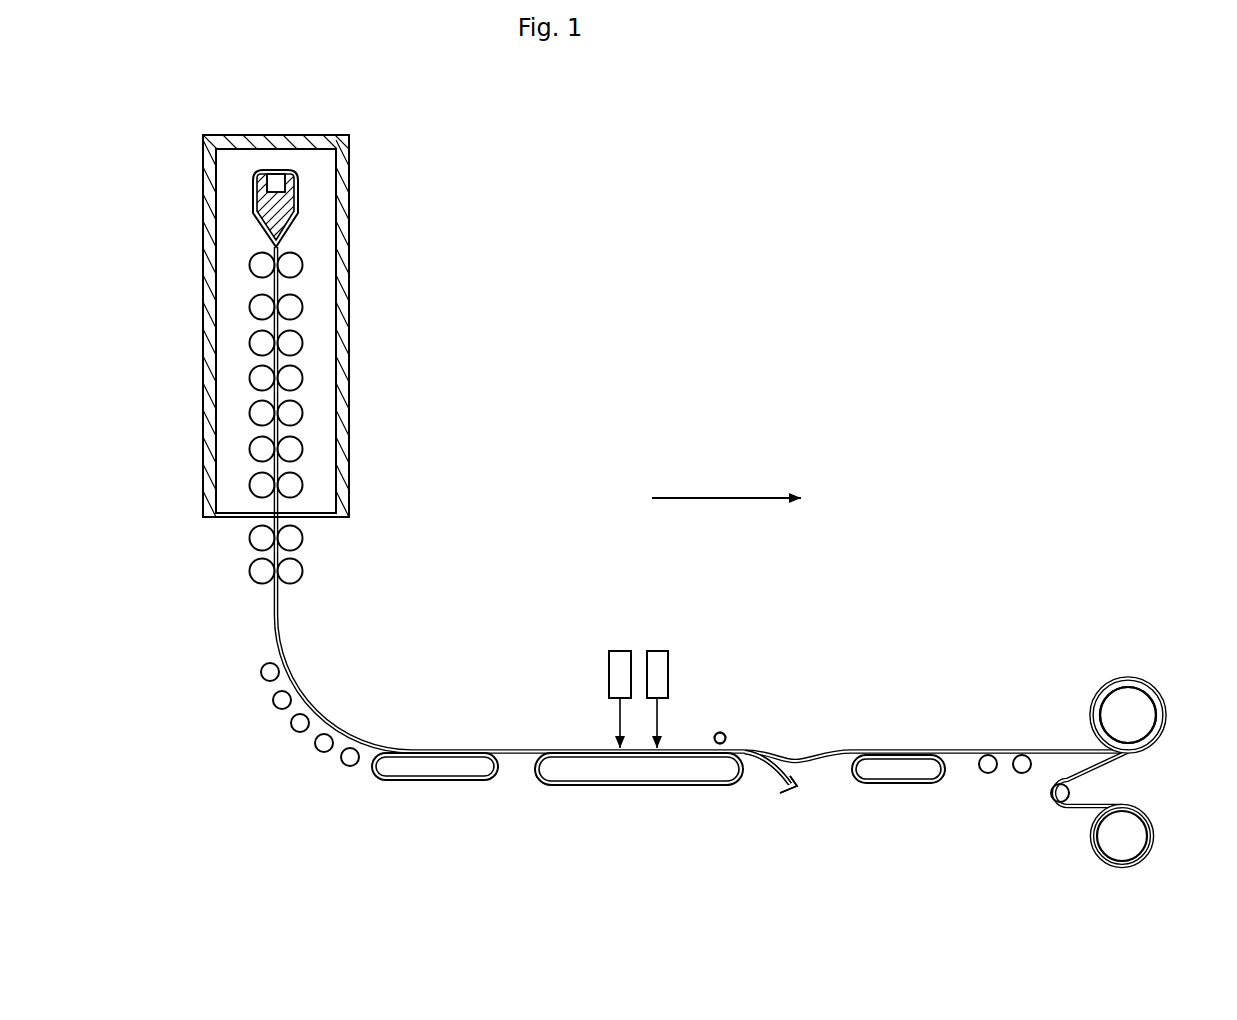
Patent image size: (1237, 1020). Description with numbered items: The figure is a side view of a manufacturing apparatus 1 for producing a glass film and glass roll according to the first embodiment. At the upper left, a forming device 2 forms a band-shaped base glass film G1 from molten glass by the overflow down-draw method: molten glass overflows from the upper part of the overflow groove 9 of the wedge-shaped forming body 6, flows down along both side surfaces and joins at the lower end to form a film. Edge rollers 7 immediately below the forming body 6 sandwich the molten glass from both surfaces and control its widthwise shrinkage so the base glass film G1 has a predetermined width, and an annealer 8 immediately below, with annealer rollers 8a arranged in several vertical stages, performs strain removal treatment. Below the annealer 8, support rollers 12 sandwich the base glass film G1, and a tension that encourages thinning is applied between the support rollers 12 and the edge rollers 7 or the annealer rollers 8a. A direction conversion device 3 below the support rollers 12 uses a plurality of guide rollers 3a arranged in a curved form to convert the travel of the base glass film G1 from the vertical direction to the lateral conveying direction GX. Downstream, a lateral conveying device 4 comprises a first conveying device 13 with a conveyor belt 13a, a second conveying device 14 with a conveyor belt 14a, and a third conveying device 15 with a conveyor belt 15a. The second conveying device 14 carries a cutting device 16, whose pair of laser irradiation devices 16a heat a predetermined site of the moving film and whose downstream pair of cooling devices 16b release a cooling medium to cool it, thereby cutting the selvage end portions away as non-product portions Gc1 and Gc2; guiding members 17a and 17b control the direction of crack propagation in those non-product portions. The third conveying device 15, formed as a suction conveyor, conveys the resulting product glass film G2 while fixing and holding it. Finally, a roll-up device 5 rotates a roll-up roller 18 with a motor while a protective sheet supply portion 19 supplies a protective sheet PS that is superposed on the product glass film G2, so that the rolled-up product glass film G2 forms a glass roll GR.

The manufacturing apparatus 1 is at (963, 308).
The forming device 2 is at (385, 158).
The direction conversion device 3 is at (284, 750).
The guide rollers 3a is at (282, 700).
The lateral conveying device 4 is at (661, 717).
The roll-up device 5 is at (1118, 784).
The forming body 6 is at (288, 211).
The edge rollers 7 is at (291, 266).
The annealer 8 is at (326, 396).
The annealer rollers 8a is at (291, 344).
The overflow groove 9 is at (274, 189).
The support rollers 12 is at (291, 571).
The first conveying device 13 is at (435, 811).
The conveyor belt 13a is at (468, 782).
The second conveying device 14 is at (639, 813).
The conveyor belt 14a is at (585, 787).
The third conveying device 15 is at (887, 798).
The conveyor belt 15a is at (900, 785).
The cutting device 16 is at (639, 655).
The laser irradiation devices 16a is at (621, 660).
The cooling devices 16b is at (663, 676).
The guiding member 17a is at (722, 726).
The guiding member 17b is at (720, 738).
The roll-up roller 18 is at (1130, 698).
The protective sheet supply portion 19 is at (1133, 874).
The base glass film G1 is at (281, 507).
The product glass film G2 is at (812, 752).
The lateral conveying direction GX is at (726, 485).
The non-product portion Gc1 is at (763, 770).
The non-product portion Gc2 is at (771, 772).
The glass roll GR is at (1094, 695).
The protective sheet PS is at (1090, 770).